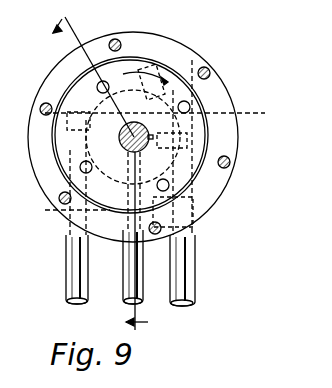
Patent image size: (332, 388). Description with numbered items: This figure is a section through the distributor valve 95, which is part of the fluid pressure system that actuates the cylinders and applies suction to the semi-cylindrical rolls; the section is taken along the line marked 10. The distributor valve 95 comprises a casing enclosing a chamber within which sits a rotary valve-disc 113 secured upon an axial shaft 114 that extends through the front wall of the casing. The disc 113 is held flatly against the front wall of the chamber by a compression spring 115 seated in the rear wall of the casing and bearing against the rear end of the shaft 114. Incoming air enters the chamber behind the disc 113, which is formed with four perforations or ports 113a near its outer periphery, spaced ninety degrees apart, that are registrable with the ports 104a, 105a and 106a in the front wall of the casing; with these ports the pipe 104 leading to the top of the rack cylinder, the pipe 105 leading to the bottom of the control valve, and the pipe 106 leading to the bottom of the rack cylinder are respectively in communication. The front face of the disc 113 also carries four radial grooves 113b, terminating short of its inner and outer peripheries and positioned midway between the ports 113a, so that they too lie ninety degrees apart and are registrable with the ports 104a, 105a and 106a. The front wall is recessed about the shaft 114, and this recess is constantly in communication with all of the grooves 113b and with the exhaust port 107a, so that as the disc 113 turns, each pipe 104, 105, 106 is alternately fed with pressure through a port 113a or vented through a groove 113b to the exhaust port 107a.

The section line 10- 10 is at (108, 167).
The distributor valve 95 is at (238, 136).
The pipe 104 is at (196, 264).
The port 104a is at (175, 158).
The pipe 105 is at (130, 283).
The port 105a is at (180, 227).
The pipe 106 is at (70, 252).
The port 106a is at (40, 176).
The port of the exhaust 107a is at (195, 212).
The rotary valve-disc 113 is at (128, 62).
The perforations or ports 113a is at (104, 80).
The radial grooves 113b is at (78, 100).
The axial shaft 114 is at (198, 84).
The compression spring 115 is at (168, 80).